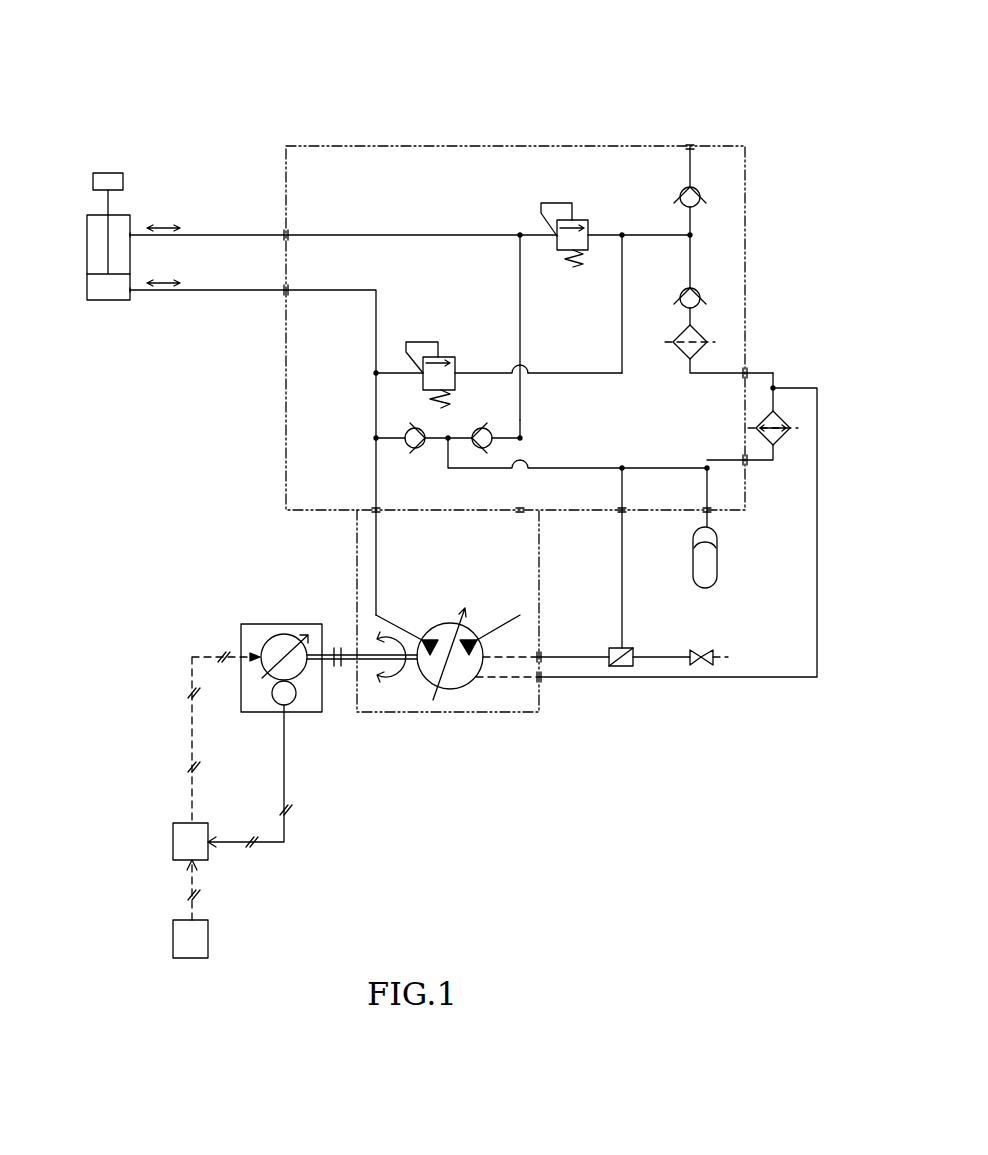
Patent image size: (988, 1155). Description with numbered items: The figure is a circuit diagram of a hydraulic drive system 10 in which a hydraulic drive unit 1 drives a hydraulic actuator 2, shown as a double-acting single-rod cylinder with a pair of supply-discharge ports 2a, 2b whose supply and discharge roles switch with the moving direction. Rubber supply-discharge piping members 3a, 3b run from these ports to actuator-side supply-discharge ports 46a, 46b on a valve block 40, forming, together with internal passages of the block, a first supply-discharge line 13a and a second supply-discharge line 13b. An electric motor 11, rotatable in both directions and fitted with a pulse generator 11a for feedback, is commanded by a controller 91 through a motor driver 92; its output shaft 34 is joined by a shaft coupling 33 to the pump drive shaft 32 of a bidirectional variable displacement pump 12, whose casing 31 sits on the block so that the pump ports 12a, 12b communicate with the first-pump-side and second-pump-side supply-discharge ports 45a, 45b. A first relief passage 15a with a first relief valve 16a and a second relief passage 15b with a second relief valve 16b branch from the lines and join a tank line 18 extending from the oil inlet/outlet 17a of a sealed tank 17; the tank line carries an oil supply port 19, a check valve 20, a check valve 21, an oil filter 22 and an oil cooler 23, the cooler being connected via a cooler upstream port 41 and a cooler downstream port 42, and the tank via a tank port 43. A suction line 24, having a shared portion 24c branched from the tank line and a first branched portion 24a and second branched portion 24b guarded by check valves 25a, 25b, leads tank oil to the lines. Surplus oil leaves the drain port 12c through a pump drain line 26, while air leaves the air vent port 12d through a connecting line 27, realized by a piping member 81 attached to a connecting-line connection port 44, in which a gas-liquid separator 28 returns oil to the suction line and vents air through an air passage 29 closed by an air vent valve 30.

The hydraulic drive unit 1 is at (329, 128).
The hydraulic actuator 2 is at (69, 158).
The first supply-discharge port 2a is at (130, 233).
The second supply-discharge port 2b is at (130, 292).
The supply-discharge piping member 3a is at (196, 233).
The supply-discharge piping member 3b is at (196, 292).
The hydraulic drive system 10 is at (301, 72).
The electric motor 11 is at (275, 623).
The pulse generator 11a is at (272, 698).
The pump 12 is at (447, 690).
The first pump port 12a is at (475, 638).
The second pump port 12b is at (420, 637).
The drain port 12c is at (541, 680).
The air vent port 12d is at (541, 655).
The first supply-discharge line 13a is at (430, 238).
The second supply-discharge line 13b is at (345, 292).
The first relief passage 15a is at (610, 250).
The second relief passage 15b is at (566, 372).
The first relief valve 16a is at (580, 218).
The second relief valve 16b is at (446, 355).
The sealed tank 17 is at (718, 560).
The oil inlet/outlet 17a is at (710, 522).
The tank line 18 is at (692, 270).
The oil supply port 19 is at (691, 145).
The check valve 20 is at (683, 188).
The check valve 21 is at (683, 290).
The oil filter 22 is at (680, 330).
The oil cooler 23 is at (785, 435).
The suction line 24 is at (645, 451).
The first branched portion 24a is at (520, 438).
The second branched portion 24b is at (376, 438).
The shared portion 24c is at (597, 468).
The check valve 25a is at (480, 426).
The check valve 25b is at (415, 450).
The pump drain line 26 is at (745, 680).
The connecting line 27 is at (588, 655).
The gas-liquid separator 28 is at (628, 648).
The air passage 29 is at (662, 655).
The air vent valve 30 is at (708, 650).
The casing 31 is at (510, 713).
The pump drive shaft 32 is at (367, 663).
The shaft coupling 33 is at (337, 668).
The output shaft 34 is at (328, 655).
The valve block 40 is at (415, 145).
The cooler upstream port 41 is at (746, 370).
The cooler downstream port 42 is at (746, 462).
The tank port 43 is at (705, 512).
The connecting-line connection port 44 is at (620, 512).
The first-pump-side supply-discharge port 45a is at (522, 510).
The second-pump-side supply-discharge port 45b is at (374, 510).
The actuator-side supply-discharge port 46a is at (283, 233).
The actuator-side supply-discharge port 46b is at (283, 292).
The piping member 81 is at (612, 677).
The controller 91 is at (173, 943).
The motor driver 92 is at (173, 845).